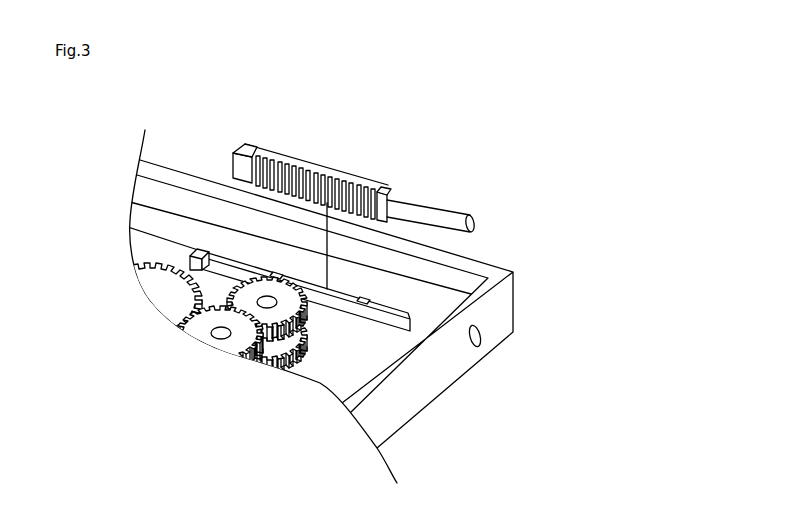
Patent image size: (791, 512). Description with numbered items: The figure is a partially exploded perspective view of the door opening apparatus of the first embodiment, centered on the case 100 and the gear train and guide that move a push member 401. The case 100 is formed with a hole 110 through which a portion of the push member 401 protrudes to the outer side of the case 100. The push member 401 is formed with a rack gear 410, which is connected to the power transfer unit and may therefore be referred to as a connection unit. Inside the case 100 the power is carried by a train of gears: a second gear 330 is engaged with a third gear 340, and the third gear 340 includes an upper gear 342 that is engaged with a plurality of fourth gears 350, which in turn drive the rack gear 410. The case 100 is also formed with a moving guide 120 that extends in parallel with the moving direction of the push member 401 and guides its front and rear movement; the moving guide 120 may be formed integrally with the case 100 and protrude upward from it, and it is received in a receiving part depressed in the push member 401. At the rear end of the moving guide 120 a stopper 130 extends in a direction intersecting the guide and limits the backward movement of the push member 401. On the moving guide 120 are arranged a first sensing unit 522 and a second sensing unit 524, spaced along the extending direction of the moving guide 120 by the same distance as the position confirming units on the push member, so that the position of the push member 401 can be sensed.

The case 100 is at (486, 267).
The hole 110 is at (478, 345).
The moving guide 120 is at (396, 321).
The stopper 130 is at (190, 253).
The second gear 330 is at (160, 293).
The third gear 340 is at (284, 370).
The upper gear 342 is at (207, 332).
The fourth gear 350 is at (305, 322).
The push member 401 is at (343, 176).
The rack gear 410 is at (253, 167).
The first sensing unit 522 is at (362, 304).
The second sensing unit 524 is at (225, 227).